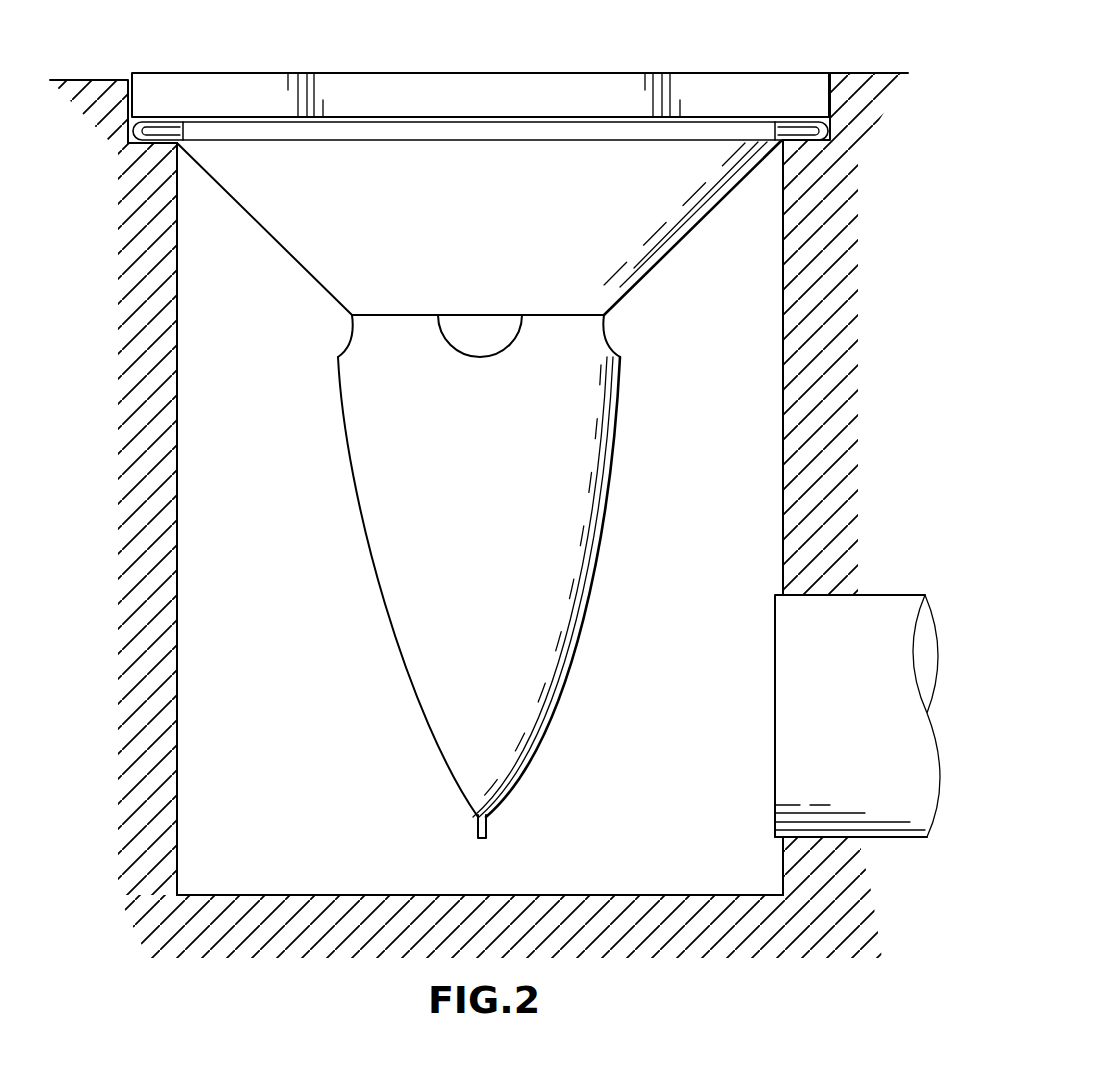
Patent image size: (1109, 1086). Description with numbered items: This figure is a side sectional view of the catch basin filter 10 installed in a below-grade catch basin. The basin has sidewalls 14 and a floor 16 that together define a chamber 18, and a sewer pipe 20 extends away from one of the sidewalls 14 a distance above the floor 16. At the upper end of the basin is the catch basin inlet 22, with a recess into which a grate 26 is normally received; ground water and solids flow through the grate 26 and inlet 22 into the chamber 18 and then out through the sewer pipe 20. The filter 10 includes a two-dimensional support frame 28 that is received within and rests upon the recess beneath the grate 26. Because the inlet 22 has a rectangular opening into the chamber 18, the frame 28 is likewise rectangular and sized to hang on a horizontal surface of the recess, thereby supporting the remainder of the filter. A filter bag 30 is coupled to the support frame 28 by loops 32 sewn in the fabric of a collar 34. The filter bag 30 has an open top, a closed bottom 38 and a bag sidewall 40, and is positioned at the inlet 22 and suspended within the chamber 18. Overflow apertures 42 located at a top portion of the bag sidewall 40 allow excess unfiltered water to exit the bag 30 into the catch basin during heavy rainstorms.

The catch basin filter 10 is at (675, 313).
The basin sidewall 14 is at (177, 678).
The floor 16 is at (673, 895).
The chamber 18 is at (239, 565).
The sewer pipe 20 is at (892, 595).
The catch basin inlet 22 is at (781, 168).
The grate 26 is at (620, 73).
The support frame 28 is at (164, 124).
The filter bag 30 is at (596, 565).
The loops 32 is at (497, 140).
The collar 34 is at (284, 252).
The closed bottom 38 is at (476, 832).
The bag sidewall 40 is at (498, 515).
The overflow apertures 42 is at (481, 358).